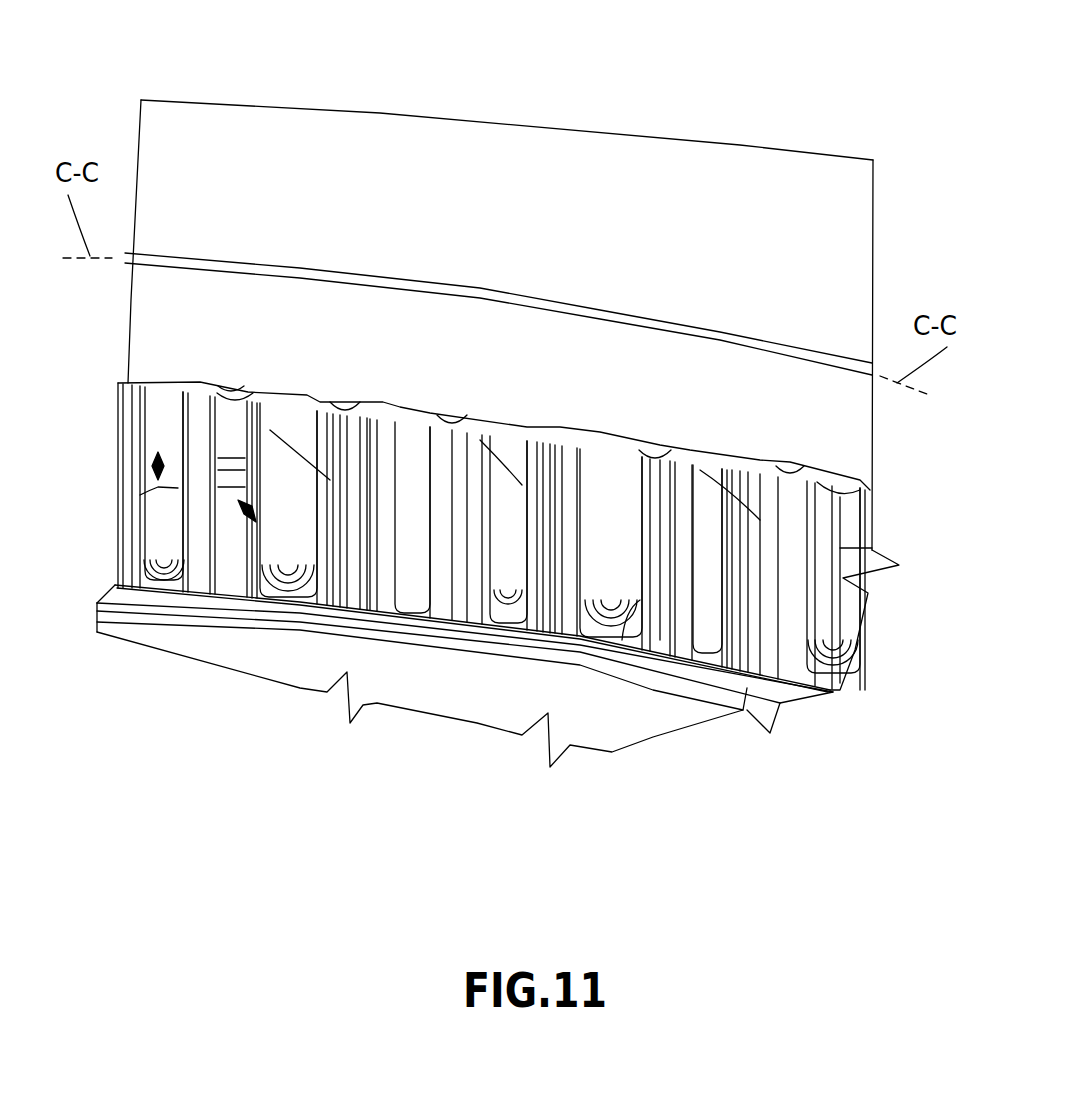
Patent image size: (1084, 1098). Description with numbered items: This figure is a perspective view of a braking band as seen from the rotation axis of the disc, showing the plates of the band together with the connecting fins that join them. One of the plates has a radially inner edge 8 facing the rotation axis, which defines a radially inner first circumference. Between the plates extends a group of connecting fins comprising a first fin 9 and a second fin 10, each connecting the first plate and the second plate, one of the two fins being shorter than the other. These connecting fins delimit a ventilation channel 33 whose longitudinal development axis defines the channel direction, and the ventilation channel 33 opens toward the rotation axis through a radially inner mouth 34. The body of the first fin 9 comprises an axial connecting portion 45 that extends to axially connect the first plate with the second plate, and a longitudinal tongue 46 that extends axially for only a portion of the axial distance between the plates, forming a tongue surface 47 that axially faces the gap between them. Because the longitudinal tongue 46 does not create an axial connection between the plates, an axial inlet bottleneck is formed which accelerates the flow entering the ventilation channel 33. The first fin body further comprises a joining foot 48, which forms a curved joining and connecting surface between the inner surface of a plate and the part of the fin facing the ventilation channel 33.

The radially inner edge 8 is at (465, 694).
The first fin 9 is at (908, 432).
The second fin 10 is at (512, 624).
The ventilation channel 33 is at (140, 495).
The radially inner mouth 34 is at (228, 378).
The axial connecting portion 45 is at (456, 611).
The longitudinal tongue 46 is at (447, 410).
The tongue surface 47 is at (683, 648).
The joining foot 48 is at (643, 721).